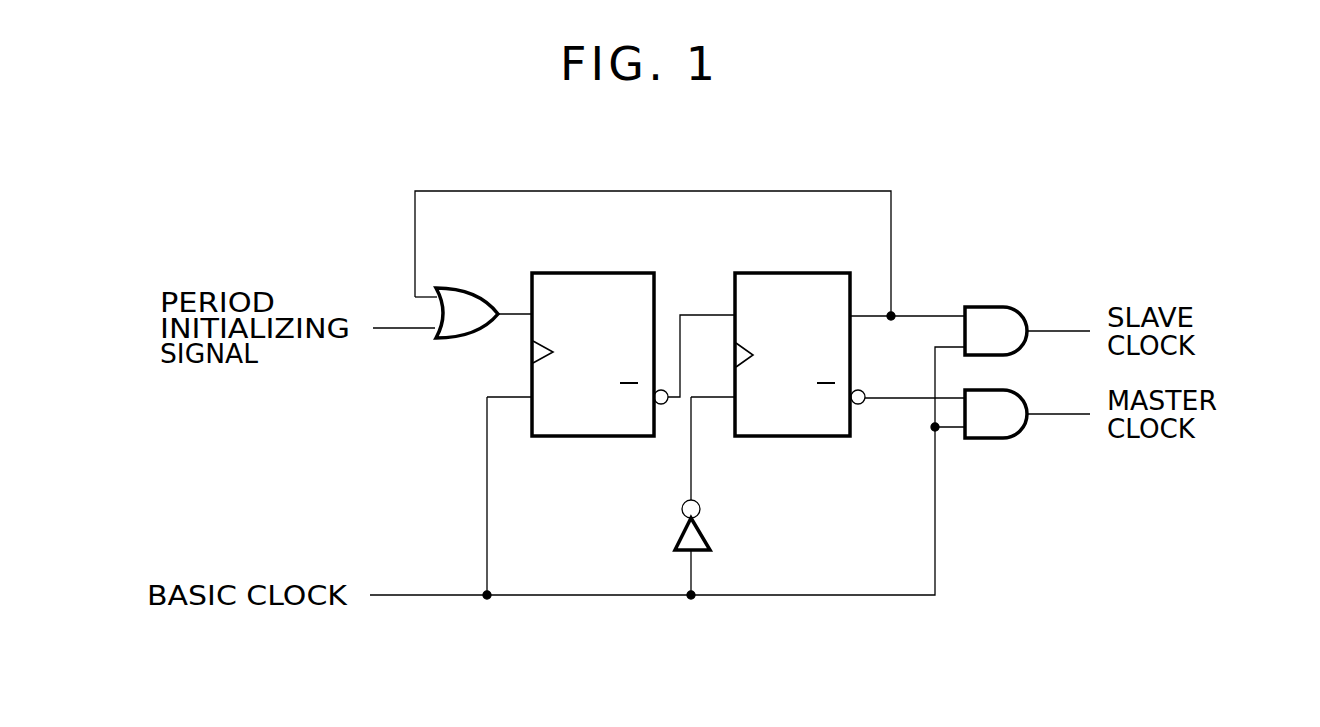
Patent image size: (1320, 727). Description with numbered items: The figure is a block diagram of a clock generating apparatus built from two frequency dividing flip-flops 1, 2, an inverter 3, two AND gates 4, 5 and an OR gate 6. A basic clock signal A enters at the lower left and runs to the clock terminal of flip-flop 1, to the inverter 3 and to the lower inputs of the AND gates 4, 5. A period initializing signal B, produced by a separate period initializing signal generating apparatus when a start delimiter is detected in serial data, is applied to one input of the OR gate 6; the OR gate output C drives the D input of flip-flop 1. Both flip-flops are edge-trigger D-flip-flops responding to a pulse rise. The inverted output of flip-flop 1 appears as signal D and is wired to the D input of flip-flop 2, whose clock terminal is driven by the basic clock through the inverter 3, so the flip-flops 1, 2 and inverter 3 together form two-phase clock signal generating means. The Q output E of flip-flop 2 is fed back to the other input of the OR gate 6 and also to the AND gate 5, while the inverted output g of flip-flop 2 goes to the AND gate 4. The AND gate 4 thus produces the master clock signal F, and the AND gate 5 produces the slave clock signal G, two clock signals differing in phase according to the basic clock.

The frequency dividing flip-flop 1 is at (595, 440).
The frequency dividing flip-flop 2 is at (800, 440).
The inverter 3 is at (712, 543).
The AND gate 4 is at (995, 390).
The AND gate 5 is at (988, 306).
The OR gate 6 is at (459, 341).
The basic clock signal A is at (408, 593).
The period initializing signal B is at (408, 331).
The OR gate output signal C is at (505, 310).
The first flip-flop inverted output signal D is at (705, 312).
The second flip-flop output signal E is at (891, 232).
The master clock signal F is at (1060, 413).
The slave clock signal G is at (1048, 329).
The second flip-flop inverted output signal g is at (900, 396).